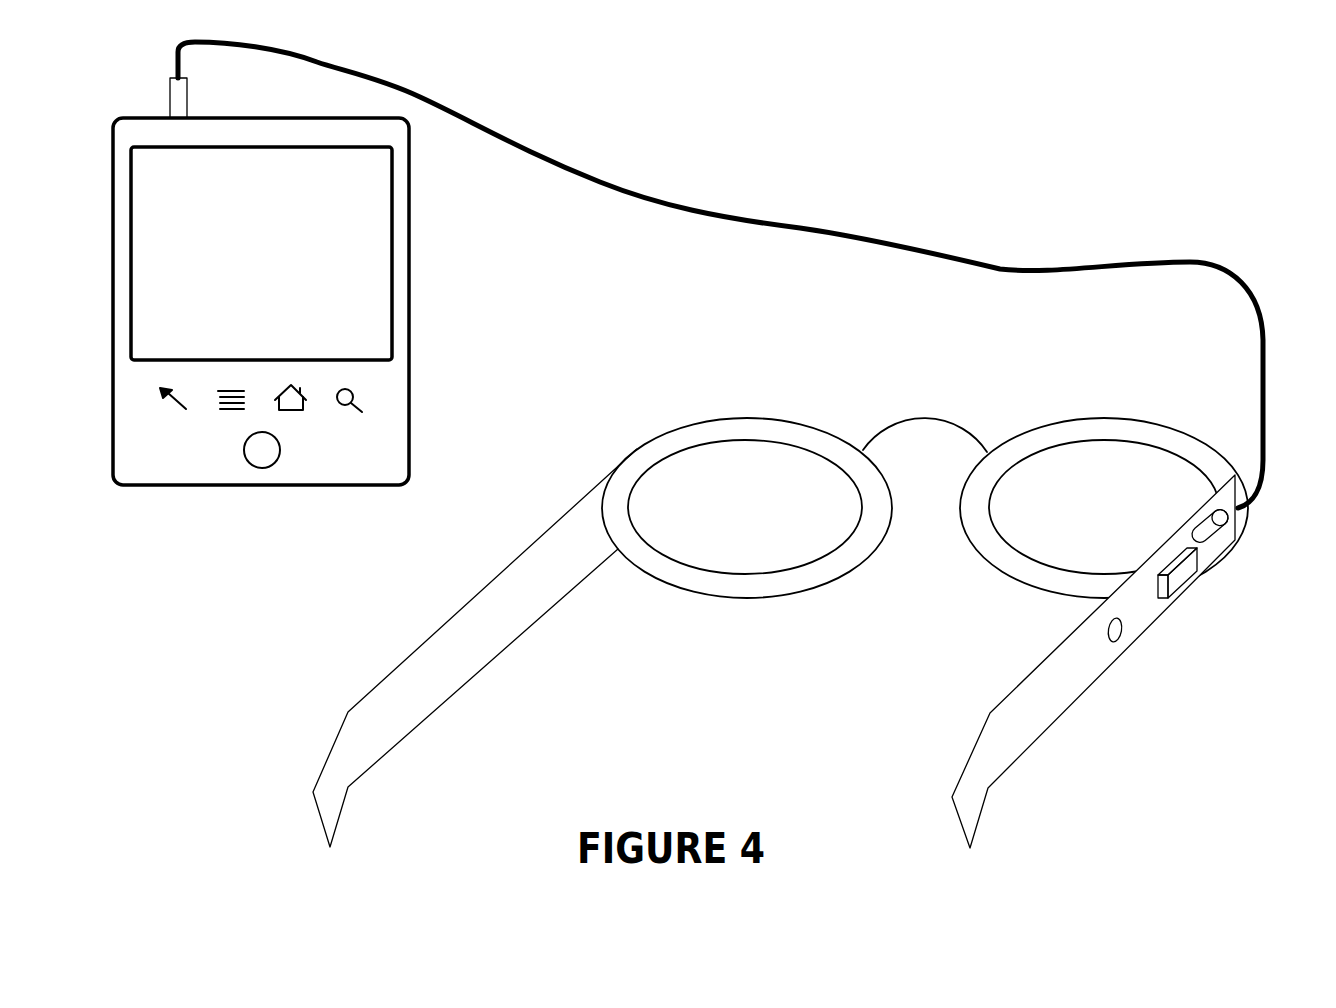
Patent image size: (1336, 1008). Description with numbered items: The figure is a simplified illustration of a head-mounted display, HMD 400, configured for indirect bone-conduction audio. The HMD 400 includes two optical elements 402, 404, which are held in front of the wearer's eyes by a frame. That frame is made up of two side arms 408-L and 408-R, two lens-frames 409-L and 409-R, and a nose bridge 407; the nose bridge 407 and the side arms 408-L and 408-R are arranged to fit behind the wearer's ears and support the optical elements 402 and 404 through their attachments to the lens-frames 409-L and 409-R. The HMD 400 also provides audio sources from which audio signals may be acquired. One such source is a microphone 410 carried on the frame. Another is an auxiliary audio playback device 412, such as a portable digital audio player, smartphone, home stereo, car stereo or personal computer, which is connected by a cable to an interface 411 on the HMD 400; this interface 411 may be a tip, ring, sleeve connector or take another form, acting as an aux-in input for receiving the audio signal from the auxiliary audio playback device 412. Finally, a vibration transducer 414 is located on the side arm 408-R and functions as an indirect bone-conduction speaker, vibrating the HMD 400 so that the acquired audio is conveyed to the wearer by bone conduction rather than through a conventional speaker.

The head-mounted display 400 is at (800, 580).
The optical element 402 is at (738, 463).
The optical element 404 is at (1066, 463).
The nose bridge 407 is at (942, 409).
The side arm 408-L is at (575, 569).
The side arm 408-R is at (1030, 718).
The lens-frame 409-L is at (747, 500).
The lens-frame 409-R is at (1088, 500).
The microphone 410 is at (1121, 649).
The interface 411 is at (1224, 533).
The auxiliary audio playback device 412 is at (410, 420).
The vibration transducer 414 is at (1181, 592).